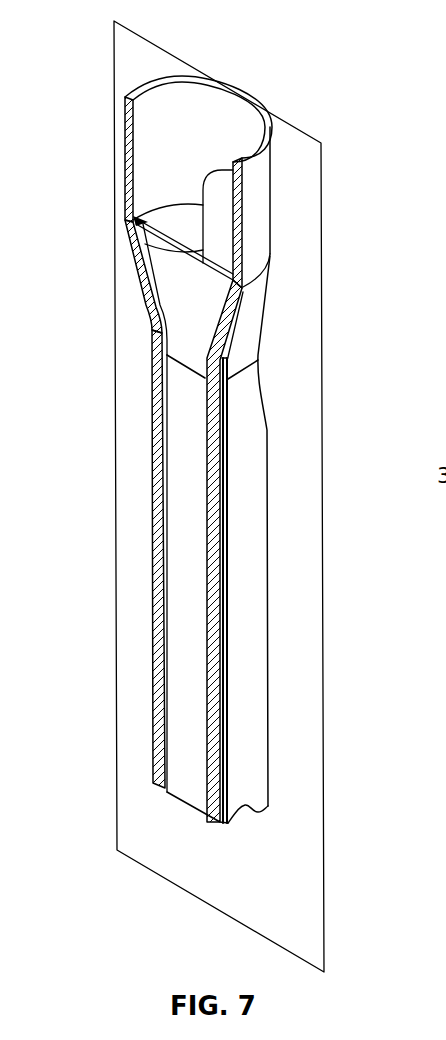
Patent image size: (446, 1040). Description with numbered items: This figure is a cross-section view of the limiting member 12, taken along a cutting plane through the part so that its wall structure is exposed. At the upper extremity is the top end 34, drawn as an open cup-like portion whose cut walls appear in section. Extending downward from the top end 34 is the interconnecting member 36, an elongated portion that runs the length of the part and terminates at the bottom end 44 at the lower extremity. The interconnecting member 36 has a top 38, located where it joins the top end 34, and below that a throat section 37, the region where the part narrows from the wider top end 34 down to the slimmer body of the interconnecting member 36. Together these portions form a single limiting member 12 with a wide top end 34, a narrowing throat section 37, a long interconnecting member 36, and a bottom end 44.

The limiting member 12 is at (334, 411).
The top end 34 is at (252, 97).
The interconnecting member 36 is at (187, 400).
The throat section 37 is at (262, 260).
The top of interconnecting member 38 is at (150, 250).
The bottom end 44 is at (228, 824).